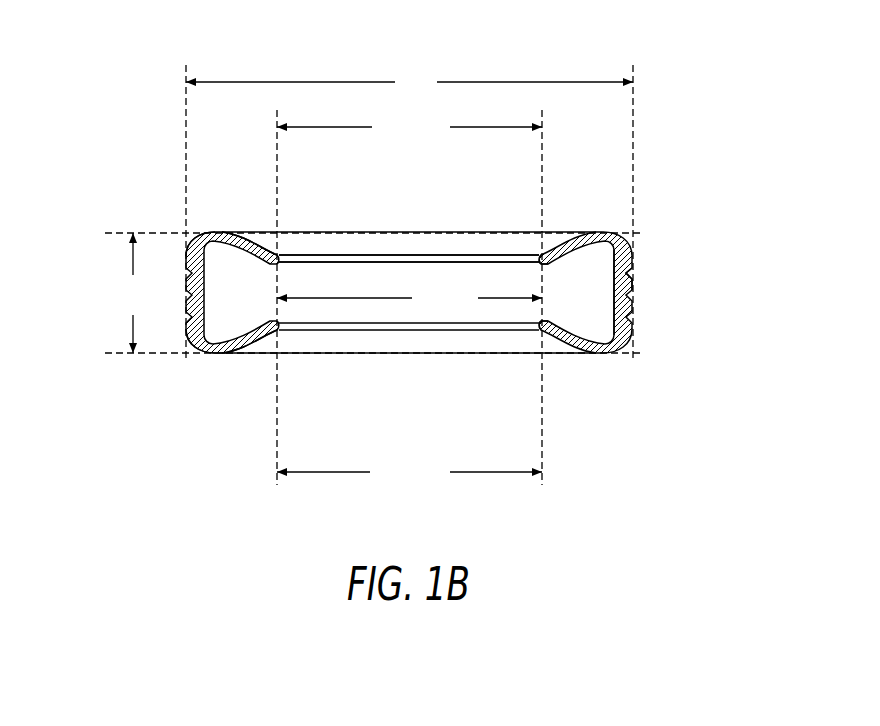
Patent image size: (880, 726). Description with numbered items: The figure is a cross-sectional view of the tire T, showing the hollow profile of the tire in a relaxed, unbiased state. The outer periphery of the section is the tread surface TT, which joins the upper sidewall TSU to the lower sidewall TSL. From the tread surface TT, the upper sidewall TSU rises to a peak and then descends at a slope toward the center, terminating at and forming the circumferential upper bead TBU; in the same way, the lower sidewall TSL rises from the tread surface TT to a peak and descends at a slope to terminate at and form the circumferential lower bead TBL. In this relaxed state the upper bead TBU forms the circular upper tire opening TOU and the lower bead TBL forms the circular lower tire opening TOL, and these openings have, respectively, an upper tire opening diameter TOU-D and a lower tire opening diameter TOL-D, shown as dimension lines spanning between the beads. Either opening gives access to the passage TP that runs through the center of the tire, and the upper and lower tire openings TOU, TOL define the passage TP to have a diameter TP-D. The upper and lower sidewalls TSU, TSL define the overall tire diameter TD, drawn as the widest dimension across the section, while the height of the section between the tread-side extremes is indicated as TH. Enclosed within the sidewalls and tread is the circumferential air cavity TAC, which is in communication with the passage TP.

The tire T is at (207, 148).
The upper sidewall TSU is at (218, 232).
The lower sidewall TSL is at (218, 355).
The tire height TH is at (142, 293).
The tire diameter TD is at (409, 77).
The upper tire opening diameter TOU-D is at (409, 122).
The passage diameter TP-D is at (409, 293).
The lower tire opening diameter TOL-D is at (409, 467).
The upper tire opening TOU is at (293, 247).
The lower tire opening TOL is at (365, 340).
The passage TP is at (373, 280).
The upper bead TBU is at (543, 256).
The lower bead TBL is at (540, 334).
The circumferential air cavity TAC is at (590, 268).
The tread surface TT is at (636, 279).